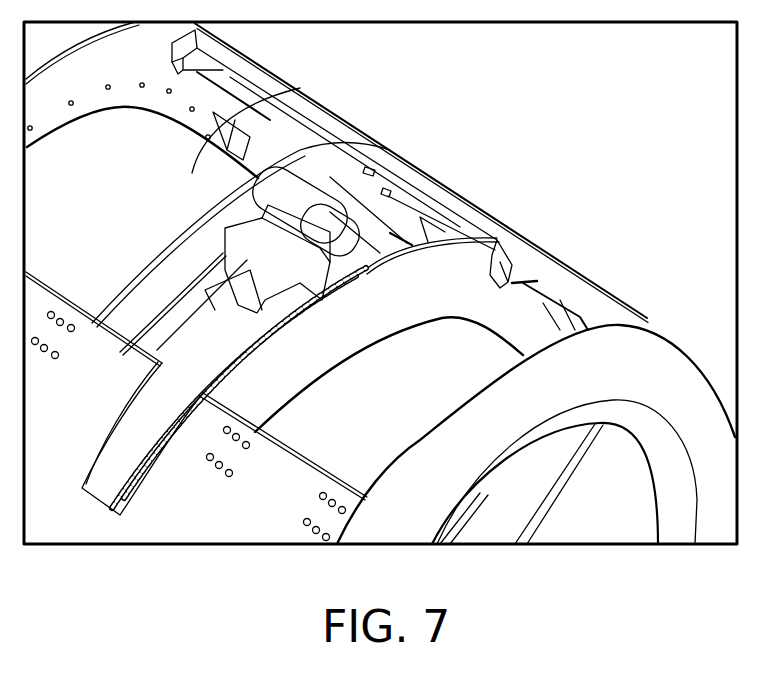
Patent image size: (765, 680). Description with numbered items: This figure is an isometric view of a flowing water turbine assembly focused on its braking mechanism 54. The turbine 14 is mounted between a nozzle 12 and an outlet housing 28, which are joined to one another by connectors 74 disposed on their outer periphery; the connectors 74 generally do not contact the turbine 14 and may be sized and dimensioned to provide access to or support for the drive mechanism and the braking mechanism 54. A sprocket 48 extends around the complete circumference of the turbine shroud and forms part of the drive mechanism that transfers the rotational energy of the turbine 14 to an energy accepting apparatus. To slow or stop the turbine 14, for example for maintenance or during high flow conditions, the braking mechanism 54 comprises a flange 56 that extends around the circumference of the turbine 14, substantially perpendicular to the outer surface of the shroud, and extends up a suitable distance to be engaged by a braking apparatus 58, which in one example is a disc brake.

The nozzle 12 is at (637, 345).
The turbine 14 is at (485, 170).
The outlet housing 28 is at (252, 98).
The sprocket 48 is at (330, 305).
The braking mechanism 54 is at (373, 163).
The flange 56 is at (160, 372).
The braking apparatus 58 is at (266, 163).
The connectors 74 is at (235, 518).